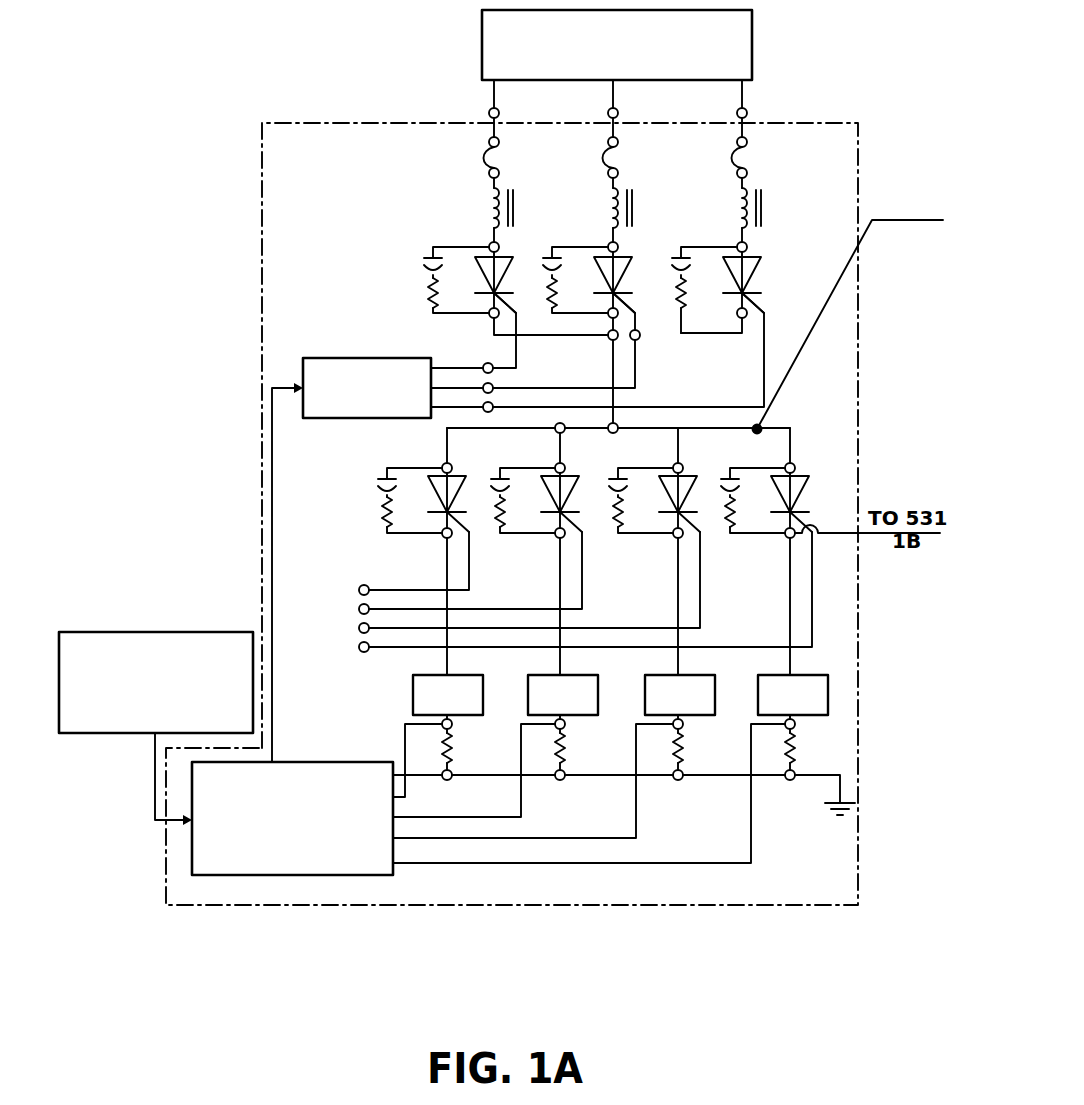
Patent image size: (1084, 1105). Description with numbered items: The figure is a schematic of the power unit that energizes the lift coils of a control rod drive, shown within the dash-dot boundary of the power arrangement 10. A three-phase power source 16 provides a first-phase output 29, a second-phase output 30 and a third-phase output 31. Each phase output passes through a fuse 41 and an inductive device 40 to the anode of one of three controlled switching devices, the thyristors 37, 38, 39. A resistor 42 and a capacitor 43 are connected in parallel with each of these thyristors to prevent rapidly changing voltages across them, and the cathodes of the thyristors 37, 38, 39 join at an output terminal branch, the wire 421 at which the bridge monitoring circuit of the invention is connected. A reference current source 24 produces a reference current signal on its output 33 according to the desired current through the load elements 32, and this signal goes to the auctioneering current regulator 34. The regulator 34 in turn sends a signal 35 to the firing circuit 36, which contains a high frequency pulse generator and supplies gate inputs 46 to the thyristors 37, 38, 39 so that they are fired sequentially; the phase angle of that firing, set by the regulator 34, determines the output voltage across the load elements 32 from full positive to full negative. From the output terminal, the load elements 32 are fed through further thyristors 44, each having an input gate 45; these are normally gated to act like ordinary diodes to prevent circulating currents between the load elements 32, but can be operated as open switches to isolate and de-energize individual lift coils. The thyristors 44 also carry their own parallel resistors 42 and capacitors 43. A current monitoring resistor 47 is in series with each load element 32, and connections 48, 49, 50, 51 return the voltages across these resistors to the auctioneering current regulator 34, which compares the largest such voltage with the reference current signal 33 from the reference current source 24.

The three-phase power source 16 is at (482, 50).
The first-phase output 29 is at (499, 113).
The second-phase output 30 is at (618, 113).
The third-phase output 31 is at (747, 113).
The power converter system 10 is at (512, 514).
The fuse 41 is at (484, 158).
The inductive device 40 is at (513, 210).
The thyristor 37 is at (478, 259).
The thyristor 38 is at (596, 259).
The thyristor 39 is at (724, 259).
The resistor 42 is at (428, 300).
The capacitor 43 is at (424, 268).
The firing circuit 36 is at (380, 358).
The gate input 46 is at (483, 407).
The wire 421 is at (762, 428).
The thyristor 44 is at (428, 484).
The input gate 45 is at (359, 647).
The load element 32 is at (533, 676).
The current monitoring resistor 47 is at (452, 762).
The connection 48 is at (405, 797).
The connection 49 is at (521, 809).
The connection 50 is at (636, 828).
The connection 51 is at (751, 846).
The auctioneering current regulator 34 is at (303, 762).
The reference current source 24 is at (112, 632).
The output of reference current source 33 is at (155, 778).
The signal 35 is at (272, 688).